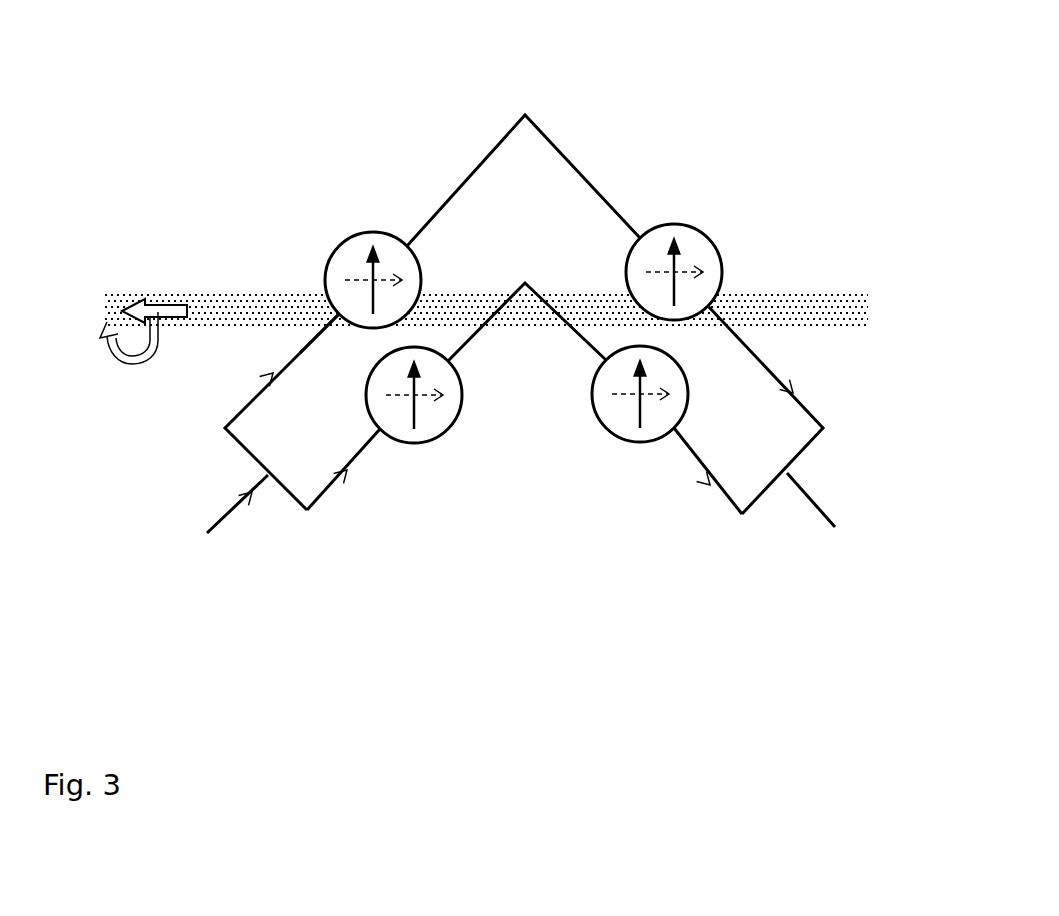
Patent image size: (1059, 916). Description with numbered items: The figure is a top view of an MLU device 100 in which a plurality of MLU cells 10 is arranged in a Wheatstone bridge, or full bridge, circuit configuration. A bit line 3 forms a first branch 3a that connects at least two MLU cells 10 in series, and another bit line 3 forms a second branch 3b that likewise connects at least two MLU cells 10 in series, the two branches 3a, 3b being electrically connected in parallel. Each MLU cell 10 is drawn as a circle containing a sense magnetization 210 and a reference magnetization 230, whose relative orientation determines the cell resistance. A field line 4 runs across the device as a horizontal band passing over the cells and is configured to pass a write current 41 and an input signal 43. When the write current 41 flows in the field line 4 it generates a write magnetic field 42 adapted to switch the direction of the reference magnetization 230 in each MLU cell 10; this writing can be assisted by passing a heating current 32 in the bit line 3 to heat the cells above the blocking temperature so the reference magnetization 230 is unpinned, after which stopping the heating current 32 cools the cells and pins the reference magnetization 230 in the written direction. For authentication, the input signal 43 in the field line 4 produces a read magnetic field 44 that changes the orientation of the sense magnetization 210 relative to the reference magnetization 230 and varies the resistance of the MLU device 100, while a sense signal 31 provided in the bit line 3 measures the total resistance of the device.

The MLU device 100 is at (802, 95).
The bit line 3 is at (473, 336).
The first branch 3a is at (473, 167).
The second branch 3b is at (370, 450).
The field line 4 is at (813, 308).
The MLU cell 10 is at (510, 333).
The sense signal 31 is at (245, 402).
The heating current 32 is at (329, 344).
The write current 41 is at (165, 270).
The input signal 43 is at (170, 305).
The write magnetic field 42 is at (106, 368).
The read magnetic field 44 is at (118, 360).
The sense magnetization 210 is at (368, 267).
The reference magnetization 230 is at (350, 277).